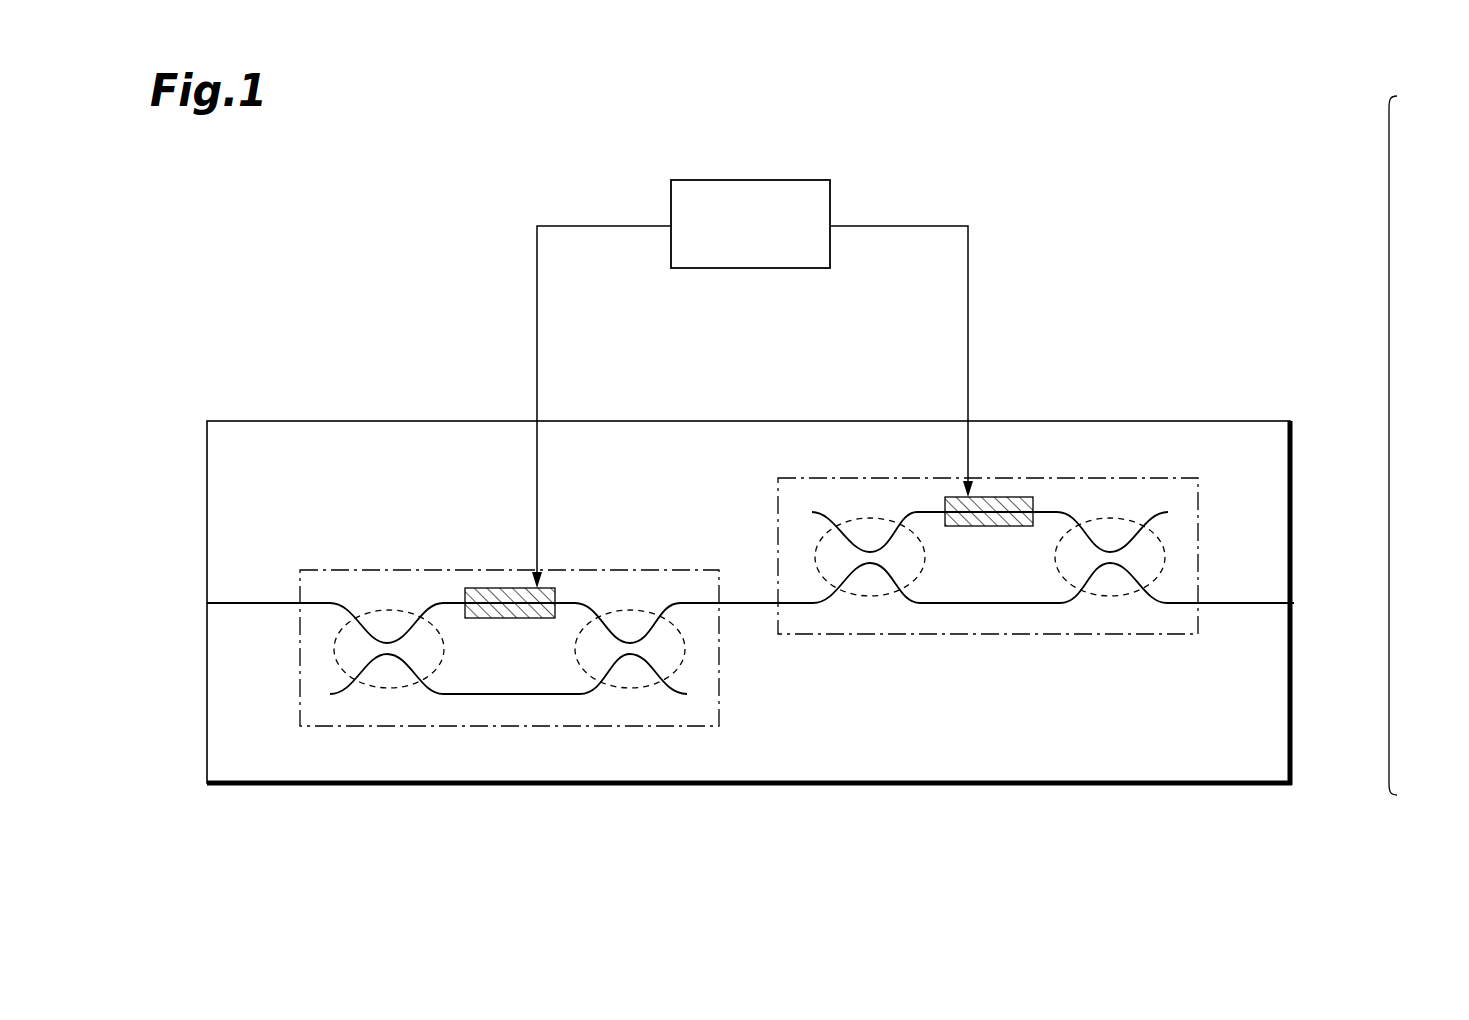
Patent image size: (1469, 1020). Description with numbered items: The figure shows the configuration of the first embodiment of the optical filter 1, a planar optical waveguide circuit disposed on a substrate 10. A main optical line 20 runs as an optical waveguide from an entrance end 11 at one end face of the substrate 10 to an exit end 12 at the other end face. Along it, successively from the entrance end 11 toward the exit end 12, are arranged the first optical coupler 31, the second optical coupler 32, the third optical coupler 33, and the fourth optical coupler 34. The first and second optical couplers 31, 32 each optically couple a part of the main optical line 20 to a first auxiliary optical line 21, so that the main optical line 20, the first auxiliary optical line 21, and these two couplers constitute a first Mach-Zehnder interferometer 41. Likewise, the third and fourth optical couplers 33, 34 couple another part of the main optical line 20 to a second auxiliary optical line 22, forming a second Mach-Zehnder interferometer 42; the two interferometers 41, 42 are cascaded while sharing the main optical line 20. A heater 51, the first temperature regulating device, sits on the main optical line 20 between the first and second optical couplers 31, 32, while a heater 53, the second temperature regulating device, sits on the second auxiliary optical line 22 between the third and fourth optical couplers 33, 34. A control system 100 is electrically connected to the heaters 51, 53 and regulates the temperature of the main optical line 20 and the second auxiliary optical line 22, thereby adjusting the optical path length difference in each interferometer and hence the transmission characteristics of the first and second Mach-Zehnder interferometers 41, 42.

The optical filter 1 is at (1389, 446).
The substrate 10 is at (438, 421).
The entrance end 11 is at (207, 604).
The exit end 12 is at (1294, 601).
The main optical line 20 is at (748, 602).
The first auxiliary optical line 21 is at (518, 695).
The second auxiliary optical line 22 is at (930, 510).
The first optical coupler 31 is at (388, 610).
The second optical coupler 32 is at (635, 610).
The third optical coupler 33 is at (860, 597).
The fourth optical coupler 34 is at (1110, 597).
The first Mach-Zehnder interferometer 41 is at (422, 570).
The second Mach-Zehnder interferometer 42 is at (958, 634).
The heater 51 is at (488, 588).
The heater 53 is at (982, 497).
The control system 100 is at (790, 180).